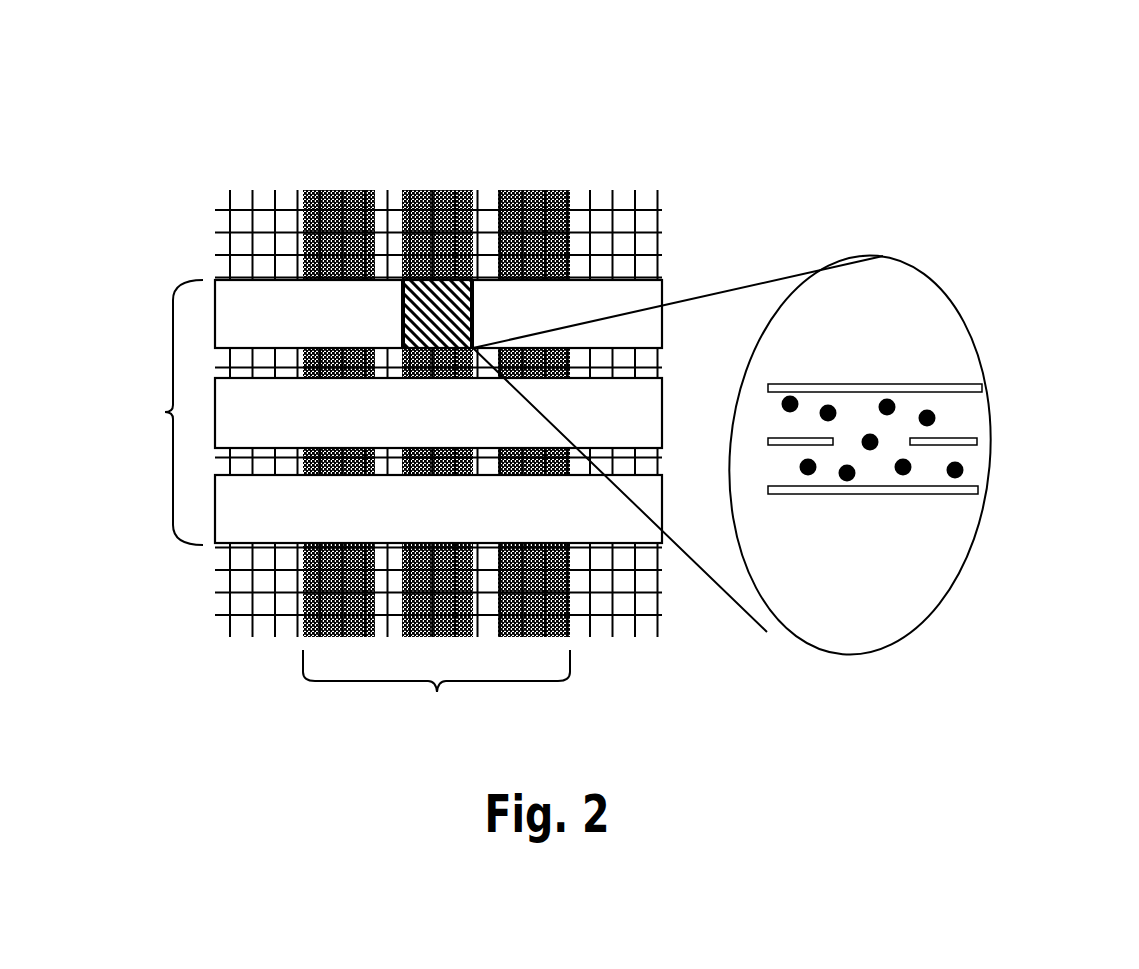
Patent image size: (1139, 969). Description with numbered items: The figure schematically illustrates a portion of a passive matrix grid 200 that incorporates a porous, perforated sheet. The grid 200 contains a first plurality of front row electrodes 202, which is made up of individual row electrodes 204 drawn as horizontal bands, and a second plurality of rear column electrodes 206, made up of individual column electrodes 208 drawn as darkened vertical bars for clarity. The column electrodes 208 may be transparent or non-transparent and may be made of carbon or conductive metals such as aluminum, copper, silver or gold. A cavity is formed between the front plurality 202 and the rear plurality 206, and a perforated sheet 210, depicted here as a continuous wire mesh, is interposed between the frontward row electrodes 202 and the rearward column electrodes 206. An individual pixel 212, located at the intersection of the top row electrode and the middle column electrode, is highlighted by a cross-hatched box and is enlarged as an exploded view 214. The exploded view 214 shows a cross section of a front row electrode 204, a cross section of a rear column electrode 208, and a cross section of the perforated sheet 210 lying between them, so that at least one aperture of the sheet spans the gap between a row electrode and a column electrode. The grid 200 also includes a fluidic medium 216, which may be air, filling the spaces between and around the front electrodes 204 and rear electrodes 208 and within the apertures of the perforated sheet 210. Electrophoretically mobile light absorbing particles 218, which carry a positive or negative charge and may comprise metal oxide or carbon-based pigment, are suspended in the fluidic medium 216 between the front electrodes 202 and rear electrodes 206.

The passive matrix grid 200 is at (613, 136).
The first plurality of front row electrodes 202 is at (165, 412).
The row electrode 204 is at (503, 322).
The second plurality of rear column electrodes 206 is at (437, 692).
The column electrode 208 is at (320, 190).
The perforated sheet 210 is at (233, 215).
The pixel 212 is at (402, 323).
The exploded view 214 is at (940, 275).
The fluidic medium 216 is at (962, 404).
The electrophoretically mobile light absorbing particles 218 is at (953, 478).